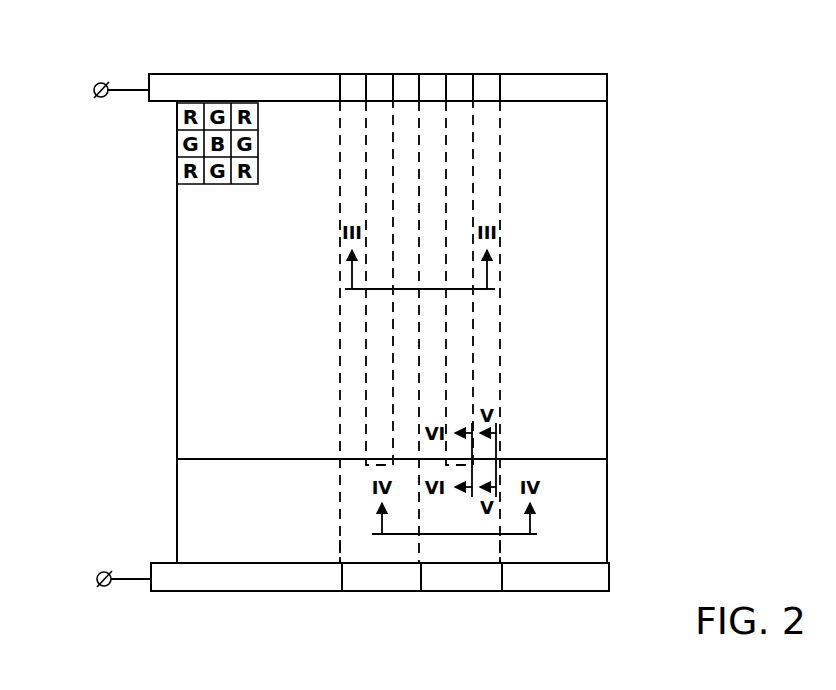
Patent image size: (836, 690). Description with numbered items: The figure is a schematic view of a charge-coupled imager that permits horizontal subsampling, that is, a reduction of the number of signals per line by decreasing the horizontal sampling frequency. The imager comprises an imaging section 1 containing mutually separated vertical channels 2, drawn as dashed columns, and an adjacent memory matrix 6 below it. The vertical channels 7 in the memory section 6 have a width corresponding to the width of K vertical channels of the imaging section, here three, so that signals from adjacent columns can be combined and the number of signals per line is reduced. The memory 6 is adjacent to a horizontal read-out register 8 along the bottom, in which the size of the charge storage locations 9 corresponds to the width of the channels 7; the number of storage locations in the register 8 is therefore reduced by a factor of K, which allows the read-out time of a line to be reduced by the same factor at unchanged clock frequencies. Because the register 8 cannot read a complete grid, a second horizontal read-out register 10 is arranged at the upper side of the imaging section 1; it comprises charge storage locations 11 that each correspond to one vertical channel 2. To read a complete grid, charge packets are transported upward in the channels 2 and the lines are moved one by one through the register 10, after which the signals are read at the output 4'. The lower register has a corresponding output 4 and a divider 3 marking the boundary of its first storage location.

The imaging section 1 is at (592, 231).
The vertical channels 2 is at (352, 170).
The column driver connection region 3 is at (386, 578).
The contact terminal 4 is at (123, 552).
The output 4' is at (120, 116).
The memory matrix 6 is at (592, 512).
The vertical channels in the memory section 7 is at (352, 553).
The horizontal read-out register 8 is at (279, 594).
The charge storage locations 9 is at (463, 578).
The second horizontal read-out register 10 is at (576, 73).
The charge storage locations 11 is at (352, 87).